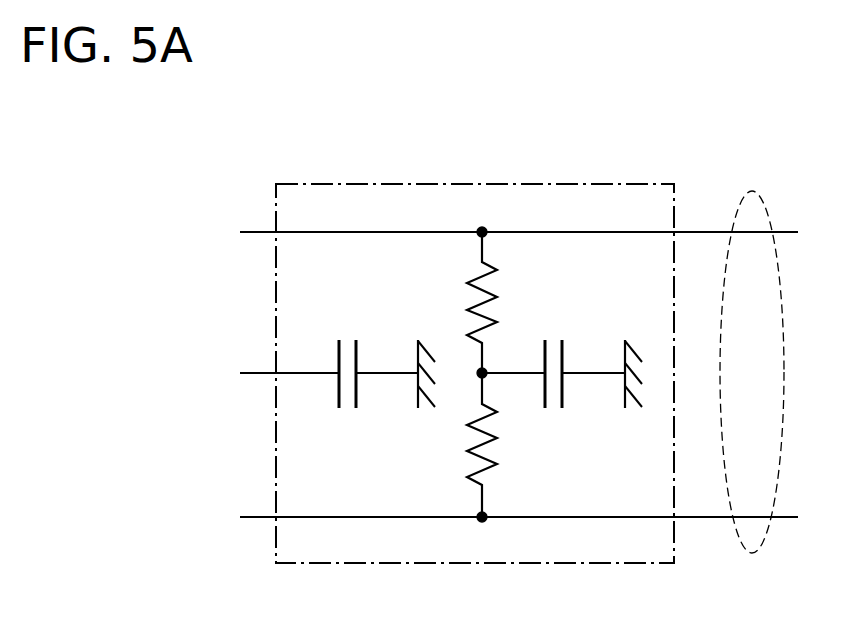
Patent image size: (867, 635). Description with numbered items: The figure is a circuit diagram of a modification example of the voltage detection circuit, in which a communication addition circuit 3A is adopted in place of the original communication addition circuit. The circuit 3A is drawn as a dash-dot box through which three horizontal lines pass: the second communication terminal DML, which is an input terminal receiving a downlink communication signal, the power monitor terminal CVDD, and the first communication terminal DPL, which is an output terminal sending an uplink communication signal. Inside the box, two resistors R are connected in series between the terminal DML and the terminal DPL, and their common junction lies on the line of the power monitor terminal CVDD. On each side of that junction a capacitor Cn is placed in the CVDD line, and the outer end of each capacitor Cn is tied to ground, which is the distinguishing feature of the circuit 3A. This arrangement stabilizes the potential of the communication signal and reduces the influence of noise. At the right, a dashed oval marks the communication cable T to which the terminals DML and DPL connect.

The communication addition circuit 3A is at (468, 183).
The communication cable T is at (749, 192).
The resistor R is at (492, 308).
The capacitor Cn is at (360, 358).
The second communication terminal DML is at (488, 233).
The power monitor terminal CVDD is at (393, 374).
The first communication terminal DPL is at (490, 518).